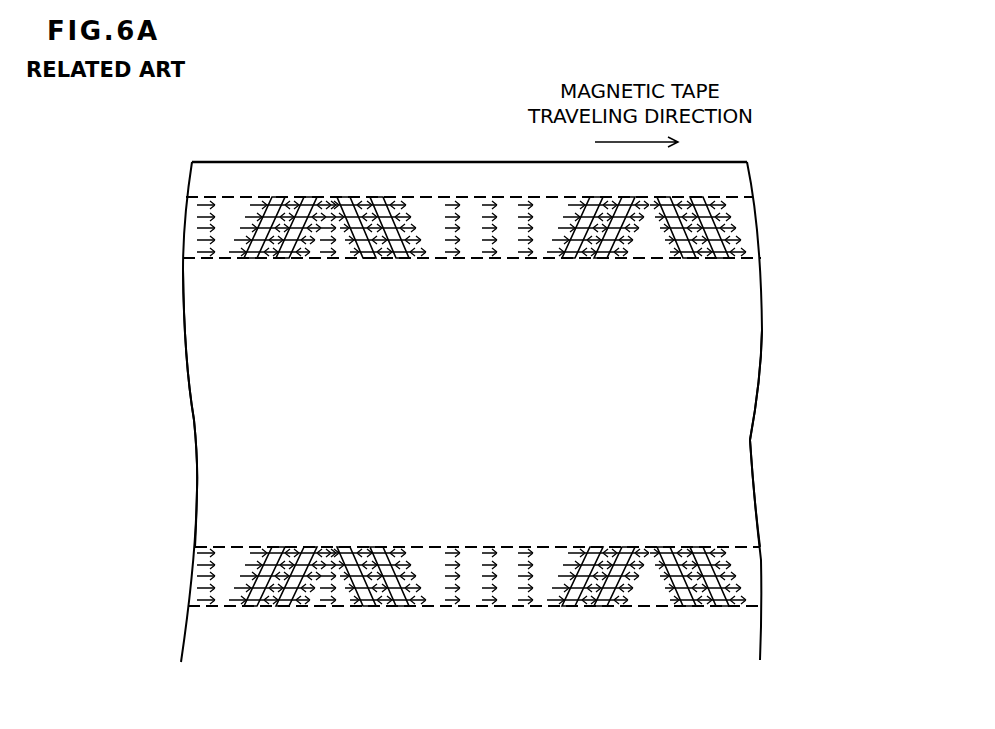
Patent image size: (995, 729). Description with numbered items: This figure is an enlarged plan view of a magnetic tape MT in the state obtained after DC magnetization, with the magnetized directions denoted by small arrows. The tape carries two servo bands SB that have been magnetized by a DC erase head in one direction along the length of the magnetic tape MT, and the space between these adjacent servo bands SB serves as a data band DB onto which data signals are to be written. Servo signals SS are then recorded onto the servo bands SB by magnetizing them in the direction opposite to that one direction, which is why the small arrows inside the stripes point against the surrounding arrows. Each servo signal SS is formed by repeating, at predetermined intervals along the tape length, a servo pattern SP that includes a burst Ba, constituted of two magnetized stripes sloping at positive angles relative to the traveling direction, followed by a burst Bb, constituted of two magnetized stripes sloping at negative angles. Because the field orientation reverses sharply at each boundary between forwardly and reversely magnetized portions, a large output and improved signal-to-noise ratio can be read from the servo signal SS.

The magnetic tape MT is at (230, 160).
The servo pattern SP is at (396, 126).
The burst Ba is at (322, 197).
The burst Bb is at (412, 197).
The servo band SB is at (503, 196).
The servo signal SS is at (748, 221).
The data band DB is at (730, 424).